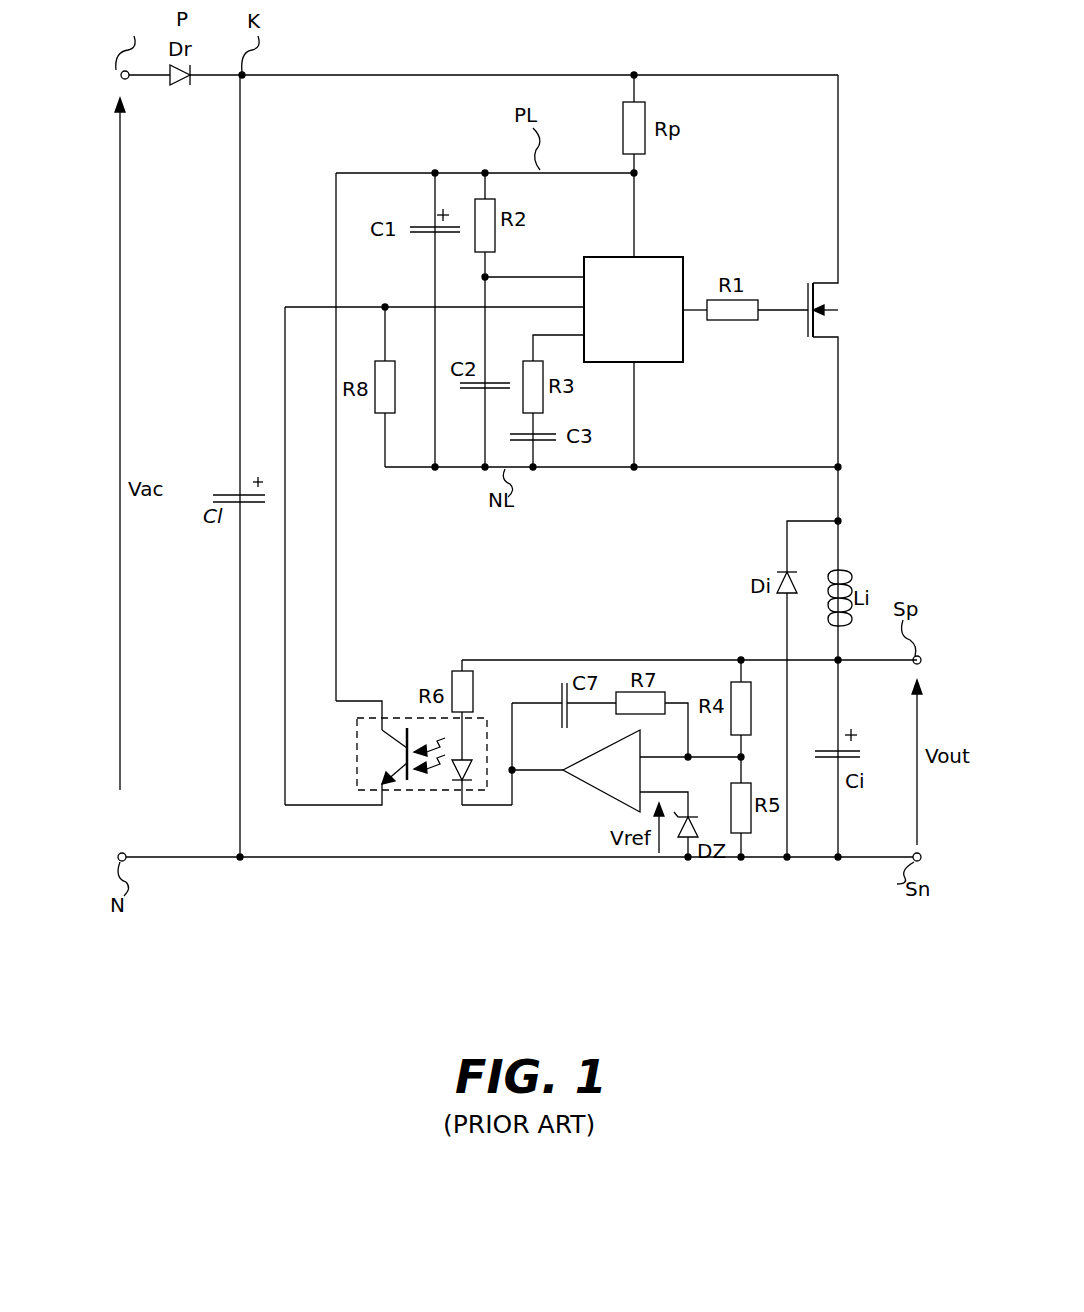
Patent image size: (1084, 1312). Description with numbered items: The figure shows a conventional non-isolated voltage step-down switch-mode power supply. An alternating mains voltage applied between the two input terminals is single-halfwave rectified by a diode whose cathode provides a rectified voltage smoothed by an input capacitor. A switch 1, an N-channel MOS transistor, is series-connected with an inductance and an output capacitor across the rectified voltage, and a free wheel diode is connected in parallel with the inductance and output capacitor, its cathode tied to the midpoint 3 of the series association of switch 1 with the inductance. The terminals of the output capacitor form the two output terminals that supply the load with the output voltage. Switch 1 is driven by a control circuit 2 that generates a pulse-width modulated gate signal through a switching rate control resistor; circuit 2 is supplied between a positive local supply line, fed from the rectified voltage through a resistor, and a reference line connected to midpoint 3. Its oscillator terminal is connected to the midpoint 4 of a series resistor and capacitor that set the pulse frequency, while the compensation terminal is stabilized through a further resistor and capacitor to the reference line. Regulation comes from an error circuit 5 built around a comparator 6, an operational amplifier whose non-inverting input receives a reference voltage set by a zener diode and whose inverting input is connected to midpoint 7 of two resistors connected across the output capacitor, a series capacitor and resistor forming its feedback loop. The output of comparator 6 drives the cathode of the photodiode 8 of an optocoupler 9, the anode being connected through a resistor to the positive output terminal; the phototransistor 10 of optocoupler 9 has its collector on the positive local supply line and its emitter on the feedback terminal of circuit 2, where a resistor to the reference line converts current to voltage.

The switch 1 is at (858, 298).
The control circuit 2 is at (673, 257).
The midpoint 3 is at (841, 521).
The midpoint 4 is at (488, 276).
The error circuit 5 is at (552, 642).
The comparator 6 is at (583, 775).
The midpoint 7 is at (744, 757).
The photodiode 8 is at (466, 766).
The optocoupler 9 is at (407, 766).
The phototransistor 10 is at (366, 750).